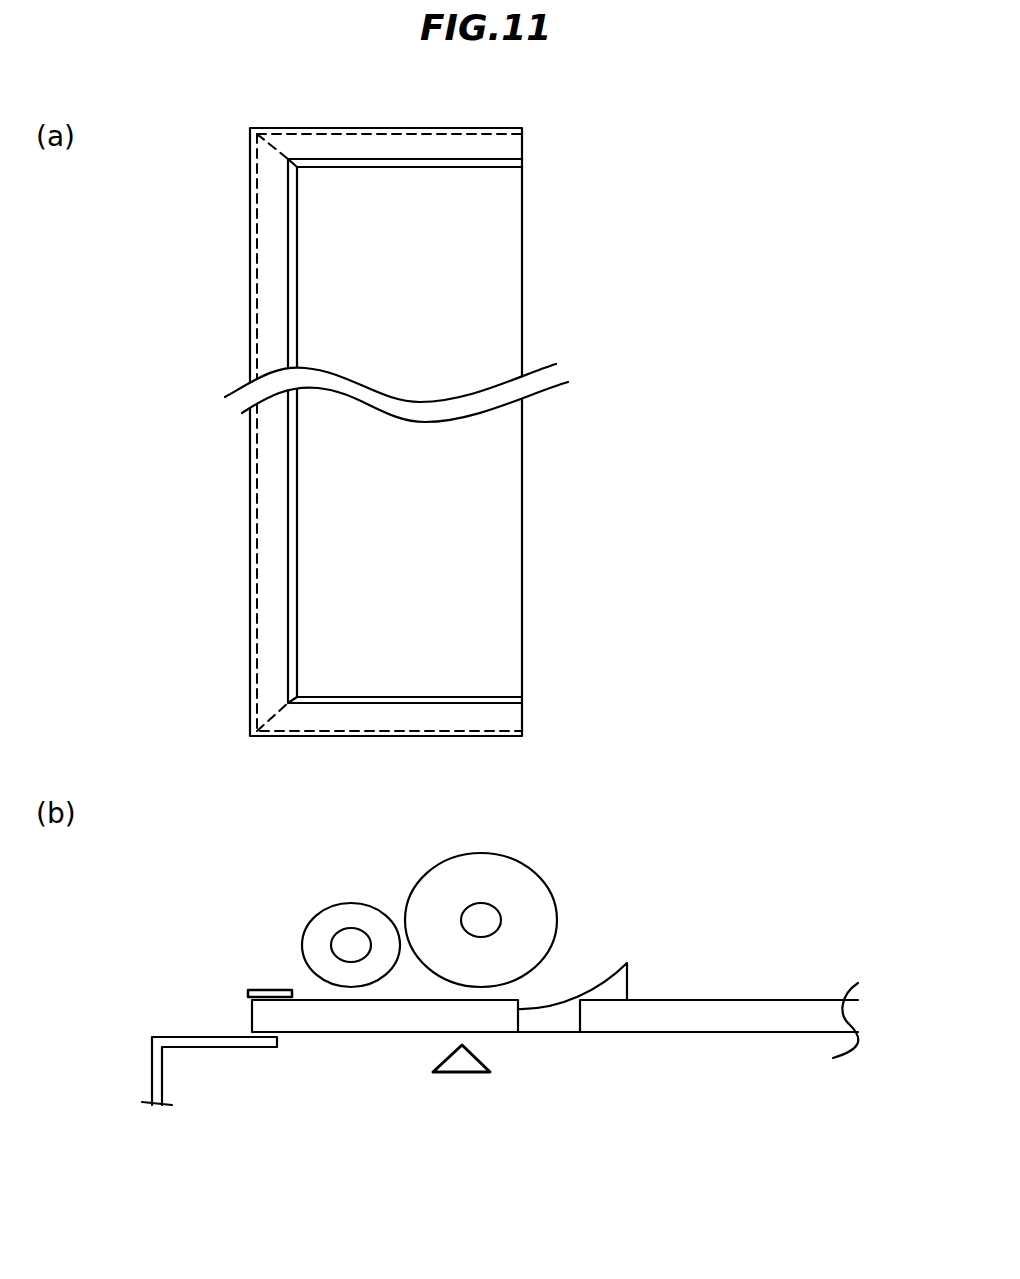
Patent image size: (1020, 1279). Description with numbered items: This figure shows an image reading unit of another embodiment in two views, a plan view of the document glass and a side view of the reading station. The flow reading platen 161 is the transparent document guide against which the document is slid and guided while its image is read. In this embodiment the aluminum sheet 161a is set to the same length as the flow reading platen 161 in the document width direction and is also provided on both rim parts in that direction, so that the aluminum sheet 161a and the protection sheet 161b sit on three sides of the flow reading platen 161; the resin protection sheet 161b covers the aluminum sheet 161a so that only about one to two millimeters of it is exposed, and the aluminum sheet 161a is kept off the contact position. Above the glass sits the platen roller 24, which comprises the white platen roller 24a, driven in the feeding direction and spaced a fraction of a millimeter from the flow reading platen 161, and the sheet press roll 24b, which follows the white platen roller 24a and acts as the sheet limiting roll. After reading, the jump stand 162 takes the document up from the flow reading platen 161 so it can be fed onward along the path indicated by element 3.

The flow reading platen 161 is at (513, 612).
The aluminum sheet 161a is at (507, 690).
The protection sheet 161b is at (393, 718).
The jump stand 162 is at (553, 1020).
The sheet conveying path 3 is at (707, 1020).
The platen roller 24 is at (489, 890).
The white platen roller 24a is at (538, 908).
The sheet press roll 24b is at (350, 915).